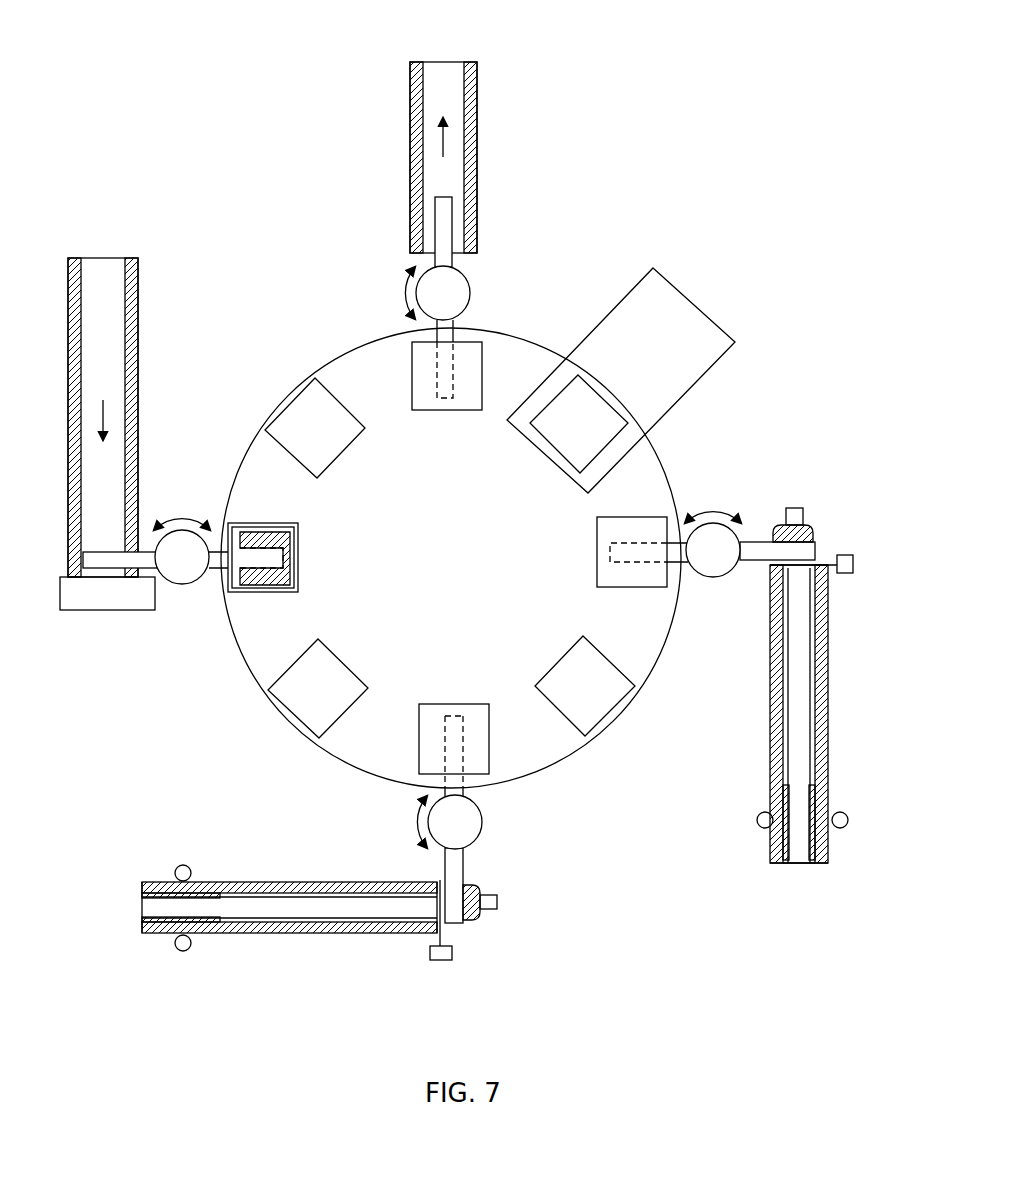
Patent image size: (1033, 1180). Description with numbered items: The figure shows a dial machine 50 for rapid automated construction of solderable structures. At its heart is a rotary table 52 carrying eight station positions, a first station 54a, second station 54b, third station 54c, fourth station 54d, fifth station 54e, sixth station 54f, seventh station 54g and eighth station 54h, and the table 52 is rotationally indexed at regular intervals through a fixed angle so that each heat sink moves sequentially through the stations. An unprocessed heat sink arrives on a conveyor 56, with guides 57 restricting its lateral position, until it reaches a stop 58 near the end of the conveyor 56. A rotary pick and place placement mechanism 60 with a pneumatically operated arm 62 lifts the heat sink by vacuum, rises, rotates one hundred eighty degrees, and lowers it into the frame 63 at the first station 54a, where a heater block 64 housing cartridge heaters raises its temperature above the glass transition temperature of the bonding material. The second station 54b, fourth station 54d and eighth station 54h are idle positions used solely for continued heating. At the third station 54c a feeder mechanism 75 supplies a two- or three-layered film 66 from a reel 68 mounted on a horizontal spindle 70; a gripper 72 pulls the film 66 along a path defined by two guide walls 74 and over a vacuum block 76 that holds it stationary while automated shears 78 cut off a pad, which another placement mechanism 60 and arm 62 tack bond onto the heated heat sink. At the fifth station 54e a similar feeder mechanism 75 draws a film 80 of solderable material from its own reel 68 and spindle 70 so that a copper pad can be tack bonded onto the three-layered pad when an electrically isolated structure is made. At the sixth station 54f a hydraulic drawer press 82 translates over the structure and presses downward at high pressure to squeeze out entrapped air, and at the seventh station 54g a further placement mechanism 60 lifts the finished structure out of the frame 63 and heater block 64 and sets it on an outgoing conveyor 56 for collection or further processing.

The dial machine 50 is at (624, 188).
The rotary table 52 is at (540, 336).
The first station 54a is at (291, 557).
The second station 54b is at (340, 655).
The third station 54c is at (490, 744).
The fourth station 54d is at (612, 662).
The fifth station 54e is at (604, 518).
The sixth station 54f is at (605, 405).
The seventh station 54g is at (485, 356).
The eighth station 54h is at (324, 388).
The conveyor 56 is at (274, 296).
The guides 57 is at (410, 152).
The stop 58 is at (97, 610).
The placement mechanism 60 is at (472, 298).
The arm 62 is at (462, 264).
The frame 63 is at (270, 533).
The heater block 64 is at (298, 562).
The film 66 is at (258, 922).
The reel 68 is at (140, 902).
The spindle 70 is at (175, 870).
The gripper 72 is at (497, 906).
The guide walls 74 is at (297, 882).
The feeder mechanism 75 is at (497, 749).
The vacuum block 76 is at (478, 922).
The shears 78 is at (440, 962).
The film 80 is at (808, 748).
The press 82 is at (720, 364).